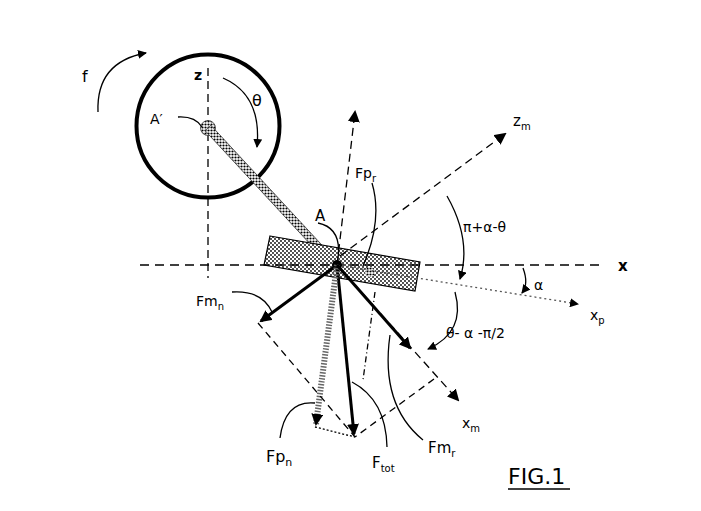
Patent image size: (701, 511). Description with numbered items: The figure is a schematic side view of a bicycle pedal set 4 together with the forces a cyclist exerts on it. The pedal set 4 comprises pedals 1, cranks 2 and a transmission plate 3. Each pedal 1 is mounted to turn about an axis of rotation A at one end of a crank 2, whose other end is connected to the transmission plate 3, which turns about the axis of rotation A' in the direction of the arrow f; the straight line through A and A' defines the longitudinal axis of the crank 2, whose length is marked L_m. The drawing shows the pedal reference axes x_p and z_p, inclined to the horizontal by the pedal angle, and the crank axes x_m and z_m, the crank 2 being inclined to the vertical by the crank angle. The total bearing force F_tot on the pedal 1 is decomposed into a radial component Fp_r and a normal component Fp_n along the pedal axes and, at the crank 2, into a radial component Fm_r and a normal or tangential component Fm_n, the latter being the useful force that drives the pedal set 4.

The pedal 1 is at (268, 247).
The crank 2 is at (273, 198).
The transmission plate 3 is at (185, 162).
The pedal set 4 is at (351, 77).